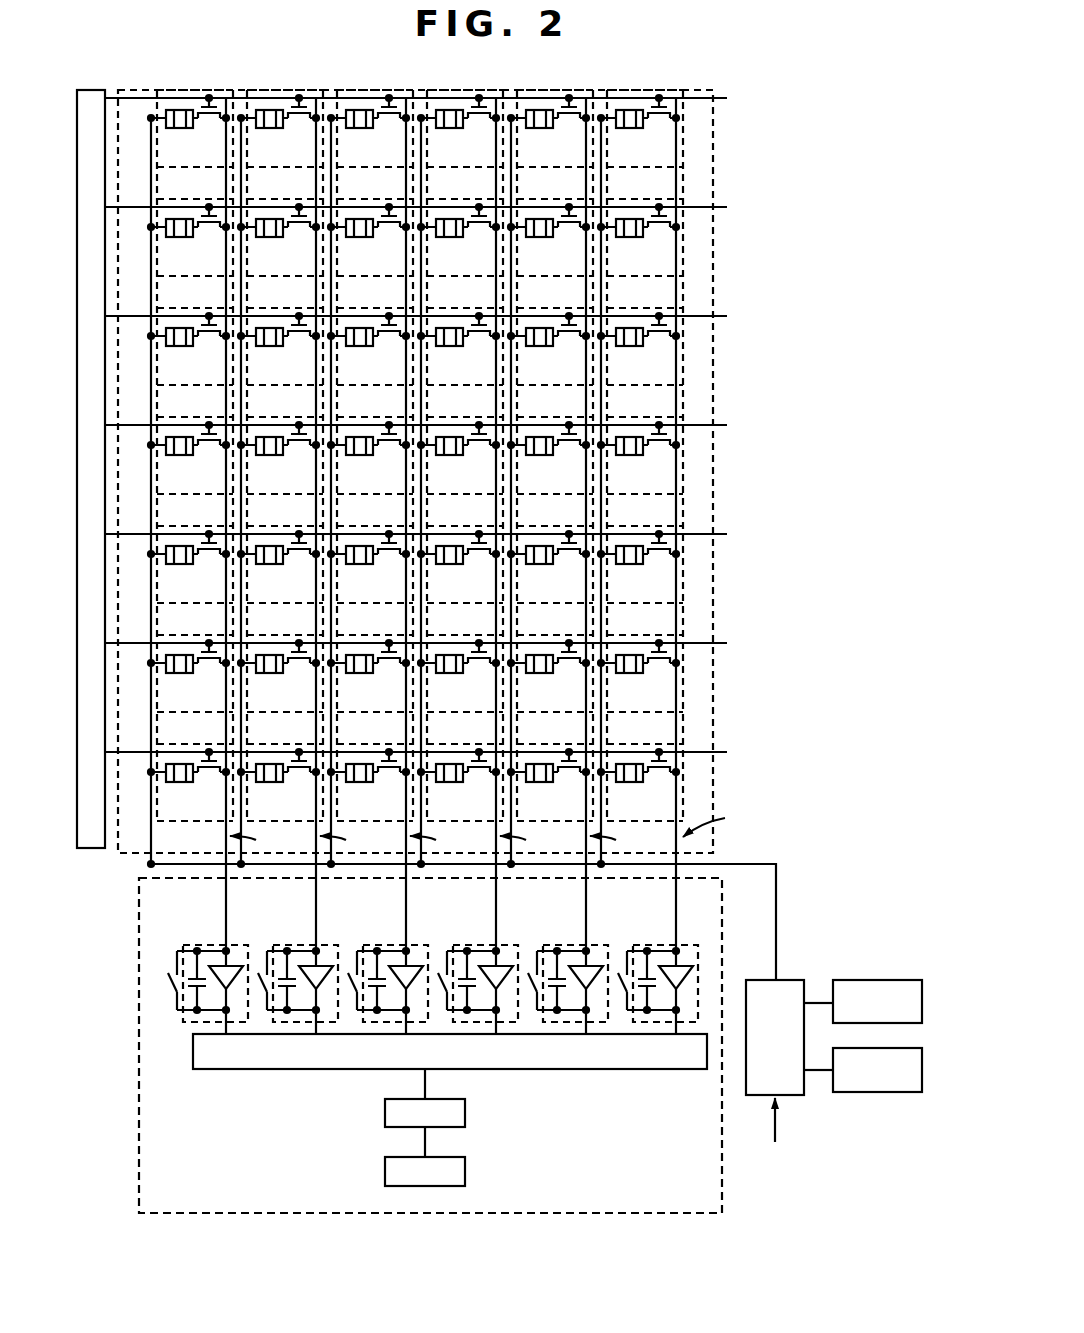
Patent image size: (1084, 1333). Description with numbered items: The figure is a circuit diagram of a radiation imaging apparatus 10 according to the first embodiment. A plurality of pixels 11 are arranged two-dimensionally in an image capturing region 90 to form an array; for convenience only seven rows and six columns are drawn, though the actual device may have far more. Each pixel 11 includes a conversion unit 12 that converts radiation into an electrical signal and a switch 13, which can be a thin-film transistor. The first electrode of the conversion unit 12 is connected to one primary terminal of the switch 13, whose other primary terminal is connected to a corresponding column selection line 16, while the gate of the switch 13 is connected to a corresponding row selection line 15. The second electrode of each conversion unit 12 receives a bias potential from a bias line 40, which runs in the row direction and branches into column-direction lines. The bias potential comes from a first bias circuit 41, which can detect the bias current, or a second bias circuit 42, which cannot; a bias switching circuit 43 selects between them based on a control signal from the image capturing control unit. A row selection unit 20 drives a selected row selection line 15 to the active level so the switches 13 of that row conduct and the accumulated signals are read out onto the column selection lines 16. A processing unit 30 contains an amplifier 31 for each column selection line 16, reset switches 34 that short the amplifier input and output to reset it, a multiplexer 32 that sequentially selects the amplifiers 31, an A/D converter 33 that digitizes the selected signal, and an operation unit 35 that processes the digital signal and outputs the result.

The radiation imaging apparatus 10 is at (105, 1058).
The pixel 11 is at (415, 443).
The conversion unit 12 is at (399, 464).
The switch 13 is at (435, 452).
The row selection line 15 is at (130, 206).
The column selection line 16 is at (226, 890).
The row selection unit 20 is at (91, 90).
The processing unit 30 is at (681, 1215).
The amplifier 31 is at (440, 963).
The multiplexer 32 is at (665, 1069).
The A/D converter 33 is at (385, 1111).
The reset switch 34 is at (415, 964).
The operation unit 35 is at (385, 1170).
The bias line 40 is at (780, 860).
The first bias circuit 41 is at (872, 977).
The second bias circuit 42 is at (874, 1097).
The bias switching circuit 43 is at (797, 1099).
The image capturing region 90 is at (700, 88).